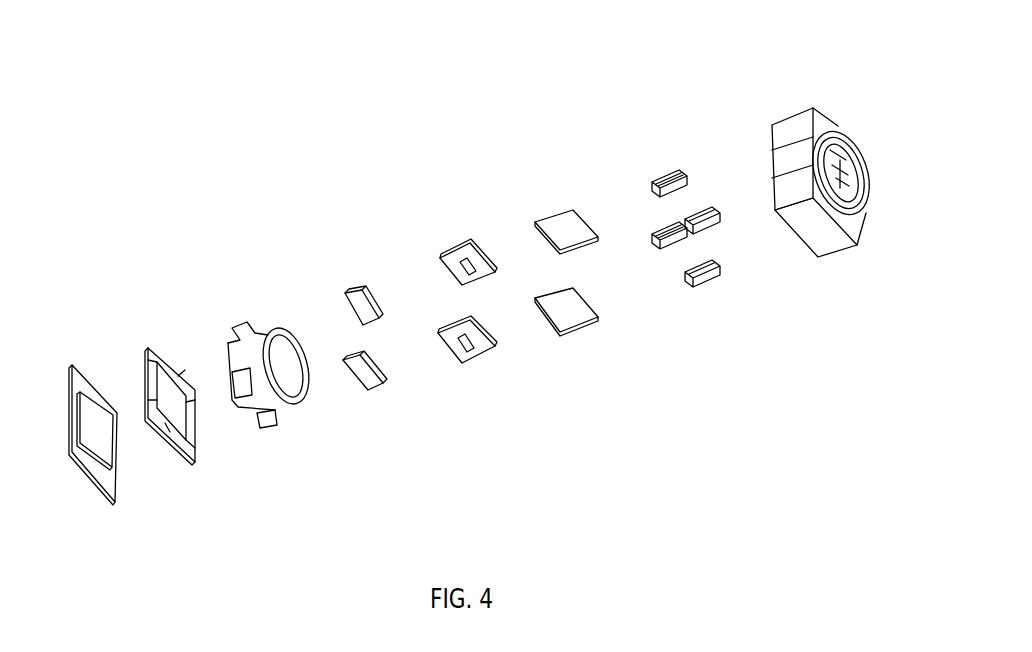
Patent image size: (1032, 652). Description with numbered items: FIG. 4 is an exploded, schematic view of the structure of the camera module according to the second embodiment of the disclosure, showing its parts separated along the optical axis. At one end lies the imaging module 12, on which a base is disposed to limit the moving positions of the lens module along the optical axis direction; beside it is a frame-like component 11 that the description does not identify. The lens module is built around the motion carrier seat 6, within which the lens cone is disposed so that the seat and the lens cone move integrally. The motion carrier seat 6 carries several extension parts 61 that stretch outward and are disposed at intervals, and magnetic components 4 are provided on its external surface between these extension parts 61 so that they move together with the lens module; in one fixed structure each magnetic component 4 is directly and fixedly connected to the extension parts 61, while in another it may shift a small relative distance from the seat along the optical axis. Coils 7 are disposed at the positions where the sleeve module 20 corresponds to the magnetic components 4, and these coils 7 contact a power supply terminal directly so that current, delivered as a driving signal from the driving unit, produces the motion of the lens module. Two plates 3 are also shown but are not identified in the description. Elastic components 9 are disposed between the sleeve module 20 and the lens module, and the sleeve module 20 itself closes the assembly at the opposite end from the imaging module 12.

The imaging module 12 is at (72, 365).
The frame 11 is at (148, 352).
The motion carrier seat 6 is at (283, 394).
The extension parts 61 is at (270, 426).
The magnetic components 4 is at (355, 292).
The coils 7 is at (442, 256).
The square plates 3 is at (545, 215).
The elastic components 9 is at (672, 170).
The sleeve module 20 is at (813, 108).